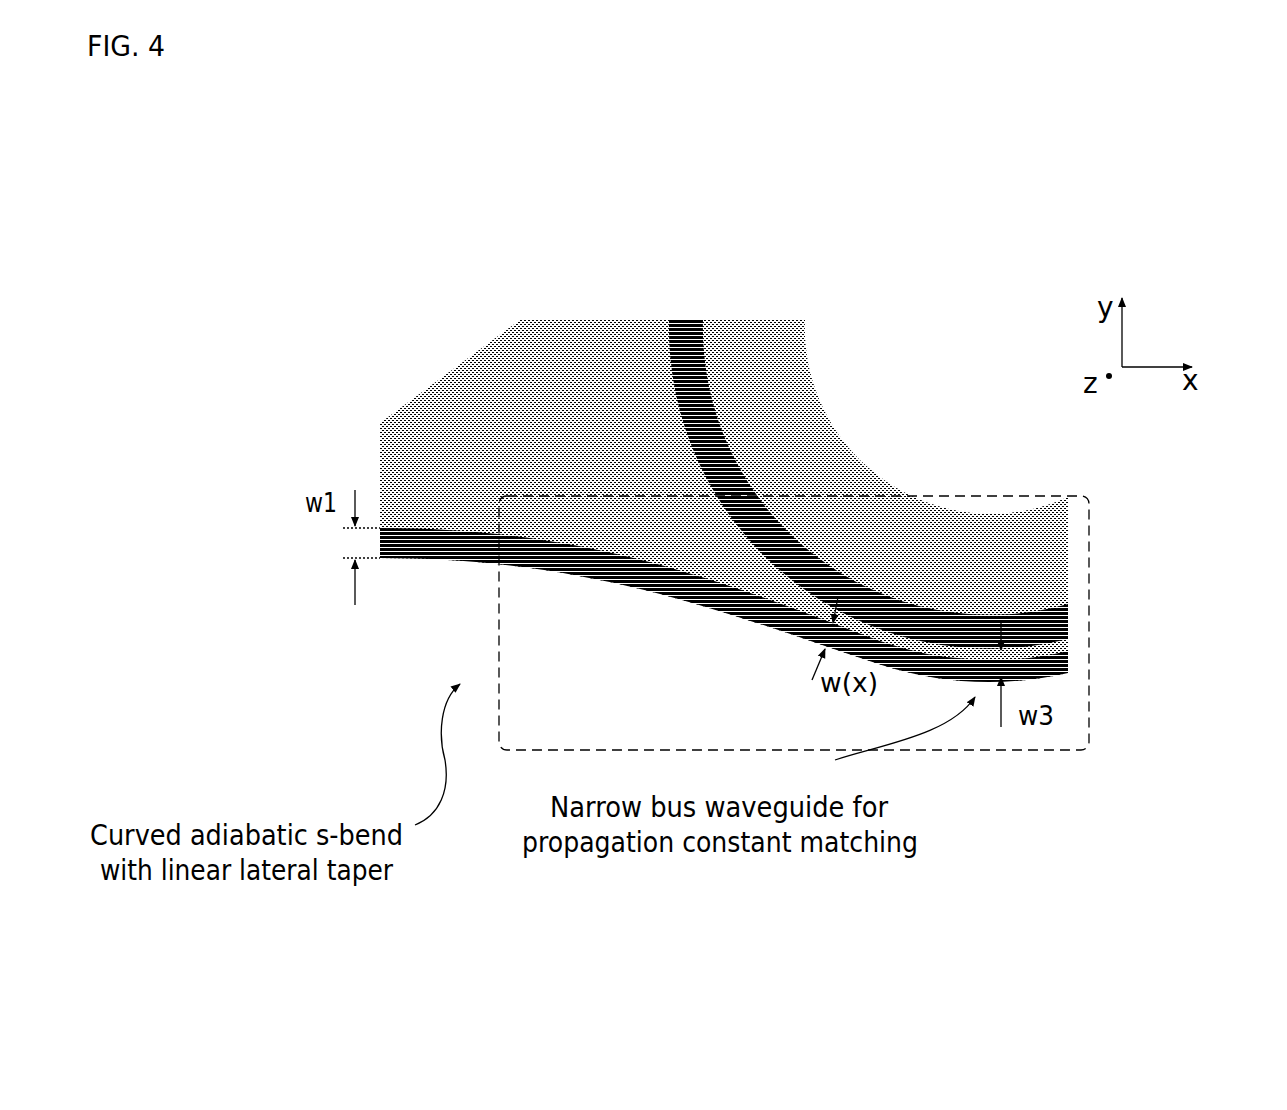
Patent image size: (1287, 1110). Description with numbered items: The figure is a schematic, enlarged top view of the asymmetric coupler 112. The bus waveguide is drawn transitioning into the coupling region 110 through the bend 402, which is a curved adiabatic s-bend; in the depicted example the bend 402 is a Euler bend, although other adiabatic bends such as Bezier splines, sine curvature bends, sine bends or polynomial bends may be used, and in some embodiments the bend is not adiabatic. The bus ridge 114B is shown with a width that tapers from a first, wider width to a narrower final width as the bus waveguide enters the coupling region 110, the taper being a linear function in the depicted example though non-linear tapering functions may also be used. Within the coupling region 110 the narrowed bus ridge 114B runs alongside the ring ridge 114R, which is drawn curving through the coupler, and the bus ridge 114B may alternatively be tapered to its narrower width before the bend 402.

The asymmetric coupler 112 is at (571, 288).
The ring ridge 114R is at (743, 283).
The bus ridge 114B is at (443, 556).
The bend 402 is at (628, 574).
The coupling region 110 is at (1090, 724).